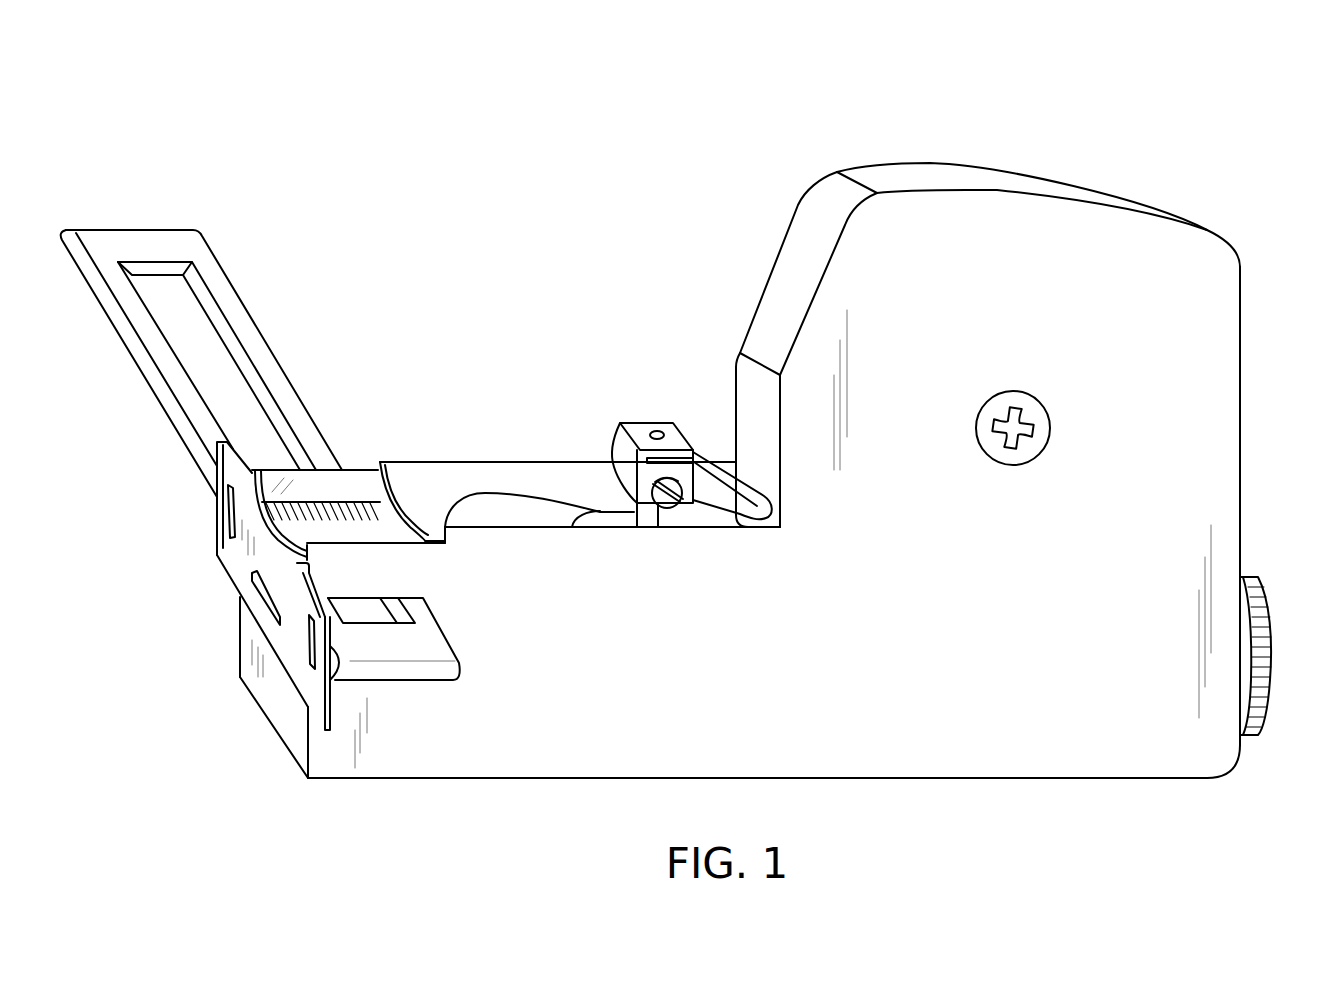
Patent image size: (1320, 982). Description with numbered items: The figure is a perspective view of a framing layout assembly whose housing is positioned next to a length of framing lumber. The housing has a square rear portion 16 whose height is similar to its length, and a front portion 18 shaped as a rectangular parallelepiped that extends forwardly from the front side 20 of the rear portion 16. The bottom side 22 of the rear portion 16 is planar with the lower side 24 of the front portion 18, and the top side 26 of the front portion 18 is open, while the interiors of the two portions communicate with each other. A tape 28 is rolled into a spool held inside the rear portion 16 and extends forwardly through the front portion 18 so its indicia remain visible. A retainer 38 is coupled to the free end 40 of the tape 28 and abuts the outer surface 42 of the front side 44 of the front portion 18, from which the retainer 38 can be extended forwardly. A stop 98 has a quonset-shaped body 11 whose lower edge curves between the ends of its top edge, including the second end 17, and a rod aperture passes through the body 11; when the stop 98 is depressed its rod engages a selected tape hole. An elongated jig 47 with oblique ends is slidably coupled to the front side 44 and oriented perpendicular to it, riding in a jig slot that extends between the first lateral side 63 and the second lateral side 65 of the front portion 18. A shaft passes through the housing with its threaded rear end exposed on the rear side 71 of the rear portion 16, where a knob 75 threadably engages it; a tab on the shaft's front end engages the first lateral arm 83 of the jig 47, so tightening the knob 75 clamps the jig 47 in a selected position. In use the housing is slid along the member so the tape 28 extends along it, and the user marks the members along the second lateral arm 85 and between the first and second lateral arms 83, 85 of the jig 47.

The body 11 is at (614, 437).
The rear portion 16 is at (1147, 186).
The second end 17 is at (990, 425).
The front portion 18 is at (455, 785).
The front side 20 is at (737, 395).
The bottom side 22 is at (583, 780).
The lower side 24 is at (1073, 779).
The top side 26 is at (506, 526).
The tape 28 is at (362, 470).
The retainer 38 is at (213, 520).
The free end 40 is at (268, 528).
The outer surface 42 is at (280, 703).
The front side 44 is at (283, 748).
The jig 47 is at (201, 303).
The first lateral side 63 is at (1170, 398).
The second lateral side 65 is at (790, 257).
The rear side 71 is at (1241, 480).
The knob 75 is at (1262, 736).
The first lateral arm 83 is at (250, 316).
The second lateral arm 85 is at (132, 348).
The stop 98 is at (633, 397).